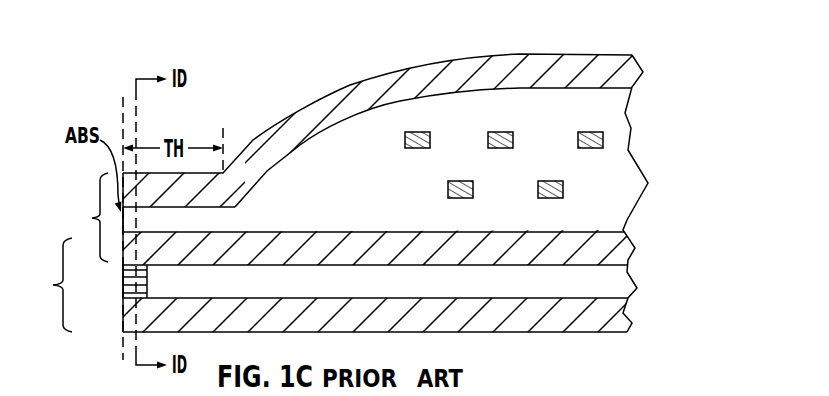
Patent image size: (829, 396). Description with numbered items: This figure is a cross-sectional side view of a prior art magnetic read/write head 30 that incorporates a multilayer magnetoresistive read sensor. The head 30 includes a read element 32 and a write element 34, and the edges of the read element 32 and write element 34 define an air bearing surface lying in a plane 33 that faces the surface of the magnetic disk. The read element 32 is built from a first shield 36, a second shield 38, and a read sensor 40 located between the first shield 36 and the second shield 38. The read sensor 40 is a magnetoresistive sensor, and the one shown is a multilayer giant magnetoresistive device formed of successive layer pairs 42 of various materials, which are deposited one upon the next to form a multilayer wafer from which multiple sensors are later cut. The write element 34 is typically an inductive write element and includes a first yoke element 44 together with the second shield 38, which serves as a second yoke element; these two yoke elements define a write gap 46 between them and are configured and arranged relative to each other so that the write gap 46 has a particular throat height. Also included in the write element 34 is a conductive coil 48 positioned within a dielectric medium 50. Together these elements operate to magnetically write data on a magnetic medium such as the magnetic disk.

The magnetic read/write head 30 is at (648, 69).
The read element 32 is at (49, 285).
The plane of the air bearing surface 33 is at (122, 119).
The write element 34 is at (85, 217).
The first shield 36 is at (620, 310).
The second shield 38 is at (630, 255).
The read sensor 40 is at (126, 296).
The layer pairs 42 is at (147, 288).
The first yoke element 44 is at (538, 62).
The write gap 46 is at (246, 214).
The conductive coil 48 is at (603, 140).
The dielectric medium 50 is at (403, 176).